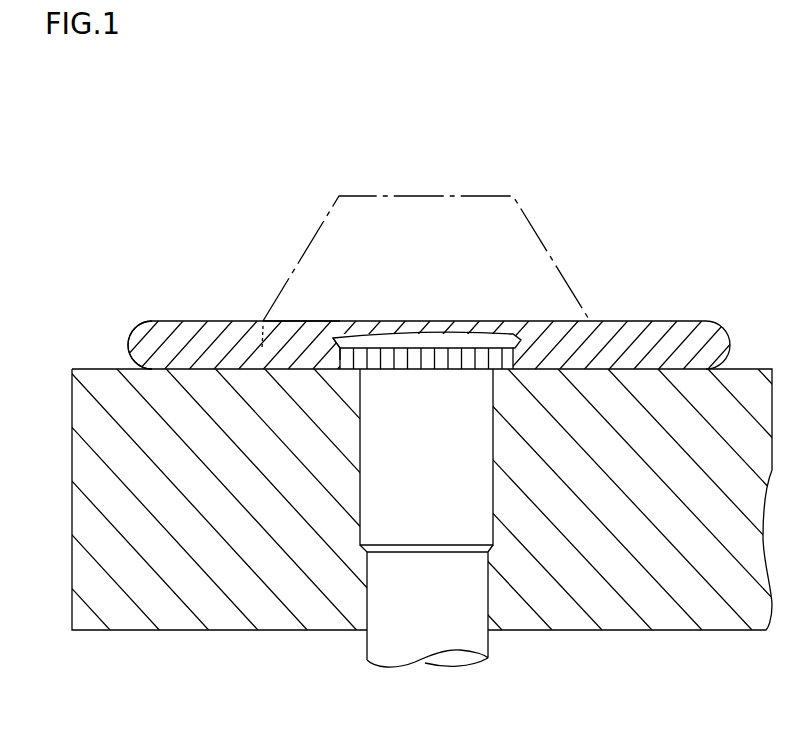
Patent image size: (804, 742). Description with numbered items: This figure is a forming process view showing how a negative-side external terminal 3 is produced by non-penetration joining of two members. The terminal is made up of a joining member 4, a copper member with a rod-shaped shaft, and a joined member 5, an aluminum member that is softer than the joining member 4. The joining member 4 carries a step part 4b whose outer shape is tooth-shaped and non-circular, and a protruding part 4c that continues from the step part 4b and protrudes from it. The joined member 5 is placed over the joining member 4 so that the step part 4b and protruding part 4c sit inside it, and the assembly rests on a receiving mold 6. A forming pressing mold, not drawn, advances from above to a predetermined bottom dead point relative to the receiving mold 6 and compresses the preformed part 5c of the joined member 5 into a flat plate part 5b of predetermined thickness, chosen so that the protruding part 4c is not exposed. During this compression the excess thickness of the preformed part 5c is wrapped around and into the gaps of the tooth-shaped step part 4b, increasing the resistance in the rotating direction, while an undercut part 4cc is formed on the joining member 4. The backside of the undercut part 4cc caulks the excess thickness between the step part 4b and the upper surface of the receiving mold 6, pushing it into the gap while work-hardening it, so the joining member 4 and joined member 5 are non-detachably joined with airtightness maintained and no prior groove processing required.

The negative-side external terminal 3 is at (633, 243).
The joining member 4 is at (385, 517).
The step part 4b is at (348, 341).
The protruding part 4c is at (337, 338).
The undercut part 4cc is at (330, 342).
The joined member 5 is at (673, 337).
The flat plate part 5b is at (147, 343).
The preformed part 5c is at (358, 227).
The receiving mold 6 is at (223, 583).